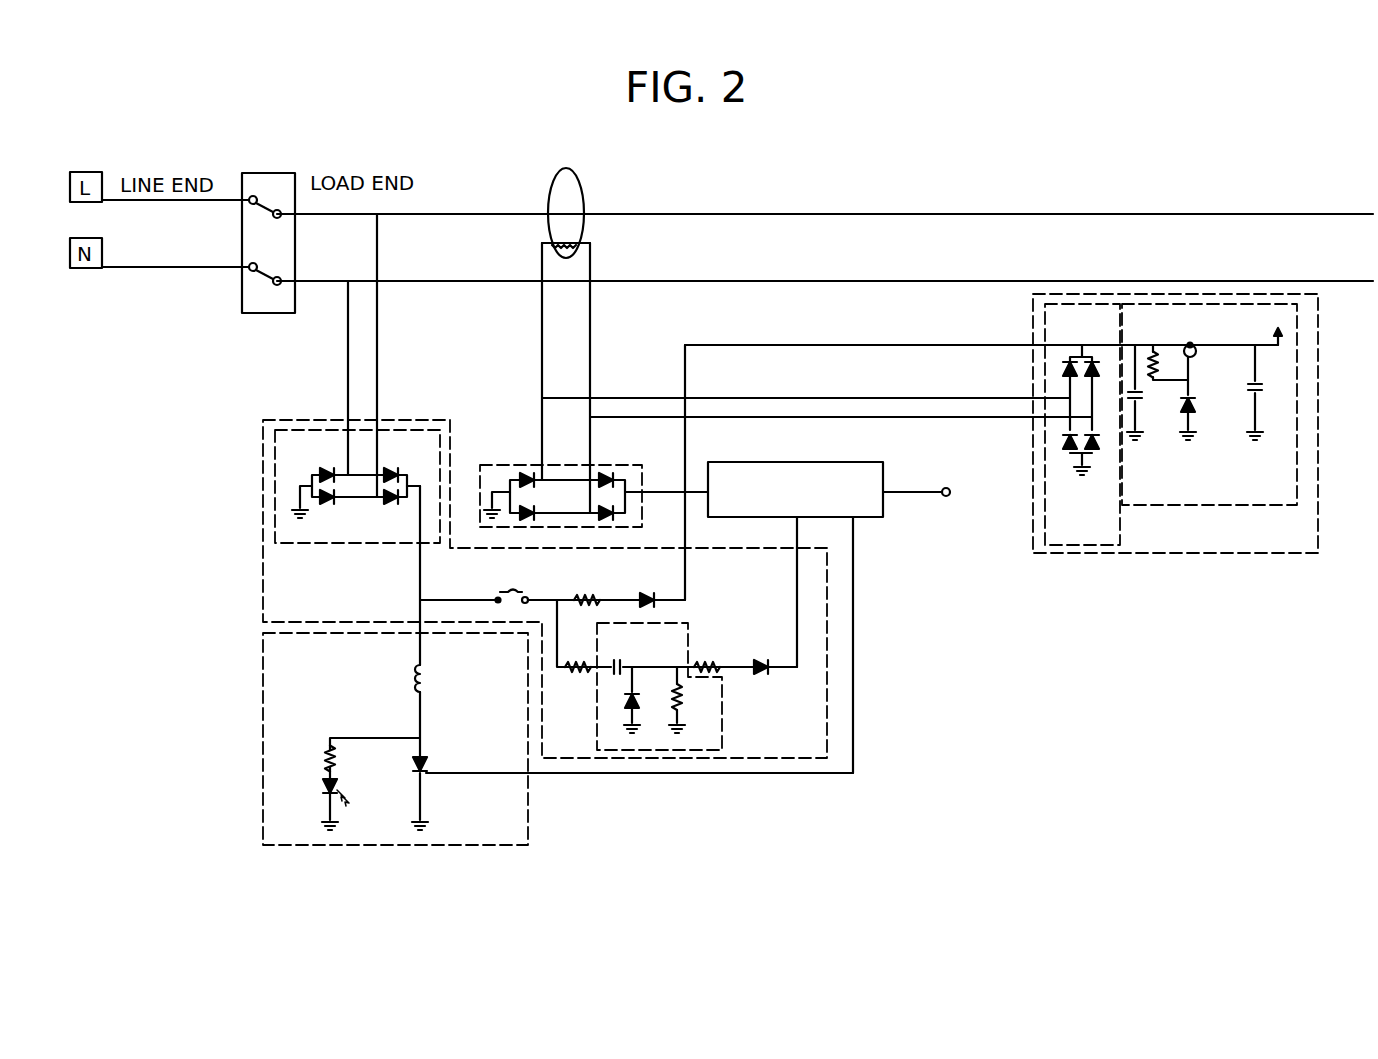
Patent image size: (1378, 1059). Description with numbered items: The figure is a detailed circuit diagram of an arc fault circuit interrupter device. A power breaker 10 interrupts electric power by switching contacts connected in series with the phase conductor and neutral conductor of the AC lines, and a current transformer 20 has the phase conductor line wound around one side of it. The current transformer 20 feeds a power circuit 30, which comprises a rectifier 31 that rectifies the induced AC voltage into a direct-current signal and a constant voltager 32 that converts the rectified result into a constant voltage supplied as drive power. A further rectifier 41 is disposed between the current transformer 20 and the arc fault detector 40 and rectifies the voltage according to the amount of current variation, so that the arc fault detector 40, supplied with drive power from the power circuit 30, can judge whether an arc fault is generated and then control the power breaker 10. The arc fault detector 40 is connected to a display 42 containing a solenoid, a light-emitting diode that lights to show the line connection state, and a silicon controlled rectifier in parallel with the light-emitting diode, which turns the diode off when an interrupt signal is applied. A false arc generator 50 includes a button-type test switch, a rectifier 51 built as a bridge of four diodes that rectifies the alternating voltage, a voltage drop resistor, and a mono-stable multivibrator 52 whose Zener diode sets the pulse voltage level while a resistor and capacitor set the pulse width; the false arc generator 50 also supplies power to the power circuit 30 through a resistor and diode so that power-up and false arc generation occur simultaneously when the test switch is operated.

The power breaker 10 is at (268, 173).
The current transformer 20 is at (583, 190).
The power circuit 30 is at (1205, 423).
The rectifier 31 is at (1120, 528).
The constant voltager 32 is at (1237, 507).
The arc fault detector 40 is at (883, 462).
The rectifier 41 is at (610, 463).
The display 42 is at (263, 697).
The false arc generator 50 is at (545, 560).
The rectifier 51 is at (353, 547).
The mono-stable multivibrator 52 is at (722, 722).